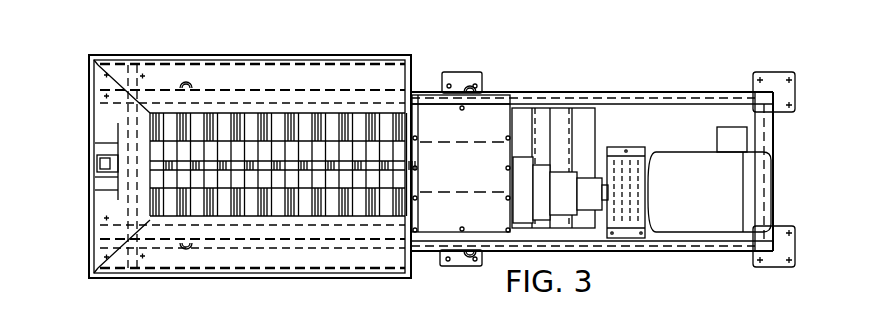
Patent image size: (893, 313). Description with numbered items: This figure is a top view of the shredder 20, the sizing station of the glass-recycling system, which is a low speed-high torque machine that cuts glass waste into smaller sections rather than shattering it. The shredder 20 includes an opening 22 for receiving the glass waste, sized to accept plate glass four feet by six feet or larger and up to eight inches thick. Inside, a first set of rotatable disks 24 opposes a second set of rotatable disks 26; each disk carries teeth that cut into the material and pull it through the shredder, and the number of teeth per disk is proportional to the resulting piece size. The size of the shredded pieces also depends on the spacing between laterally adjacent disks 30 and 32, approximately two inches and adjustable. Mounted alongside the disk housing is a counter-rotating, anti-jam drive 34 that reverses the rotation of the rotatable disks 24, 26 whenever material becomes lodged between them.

The shredder 20 is at (81, 44).
The opening 22 is at (223, 76).
The first set of rotatable disks 24 is at (160, 145).
The second set of rotatable disks 26 is at (150, 200).
The laterally adjacent disk 30 is at (295, 117).
The laterally adjacent disk 32 is at (313, 120).
The counter-rotating, anti-jam drive 34 is at (563, 177).